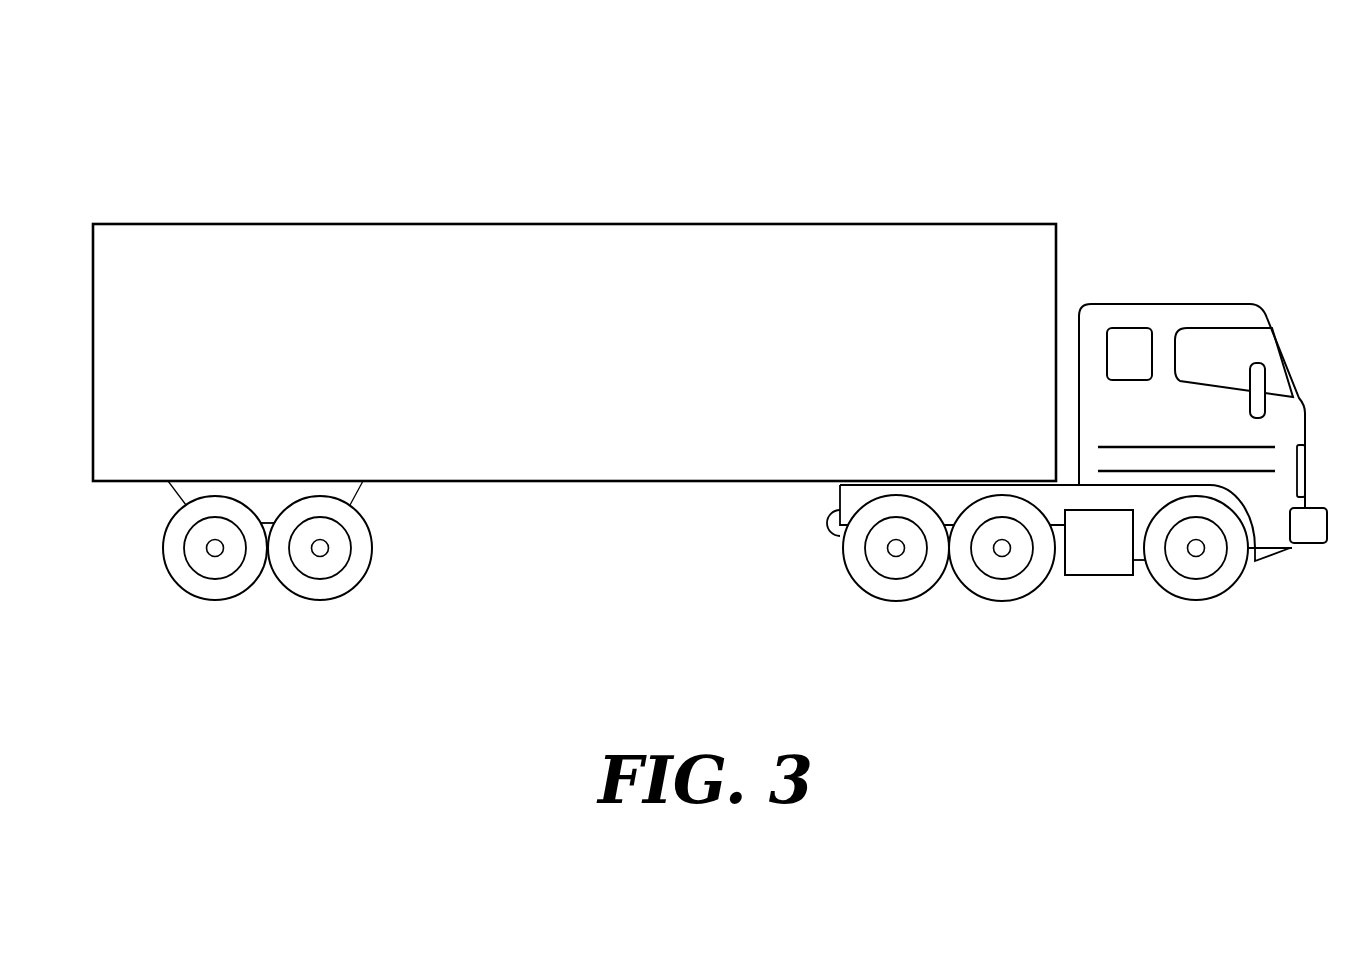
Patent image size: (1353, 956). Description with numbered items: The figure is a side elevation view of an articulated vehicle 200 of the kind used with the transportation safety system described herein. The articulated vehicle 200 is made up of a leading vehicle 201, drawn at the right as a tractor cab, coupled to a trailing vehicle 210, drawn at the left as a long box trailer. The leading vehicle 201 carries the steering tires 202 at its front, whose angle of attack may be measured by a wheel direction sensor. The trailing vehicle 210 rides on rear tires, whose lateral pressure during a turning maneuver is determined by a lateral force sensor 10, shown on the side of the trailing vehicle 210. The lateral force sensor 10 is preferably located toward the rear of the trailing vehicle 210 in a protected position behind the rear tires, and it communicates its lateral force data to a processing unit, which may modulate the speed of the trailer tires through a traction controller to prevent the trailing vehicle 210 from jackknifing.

The articulated vehicle 200 is at (870, 127).
The trailing vehicle 210 is at (661, 211).
The leading vehicle 201 is at (1208, 291).
The steering tires 202 is at (1213, 575).
The lateral force sensor 10 is at (417, 414).